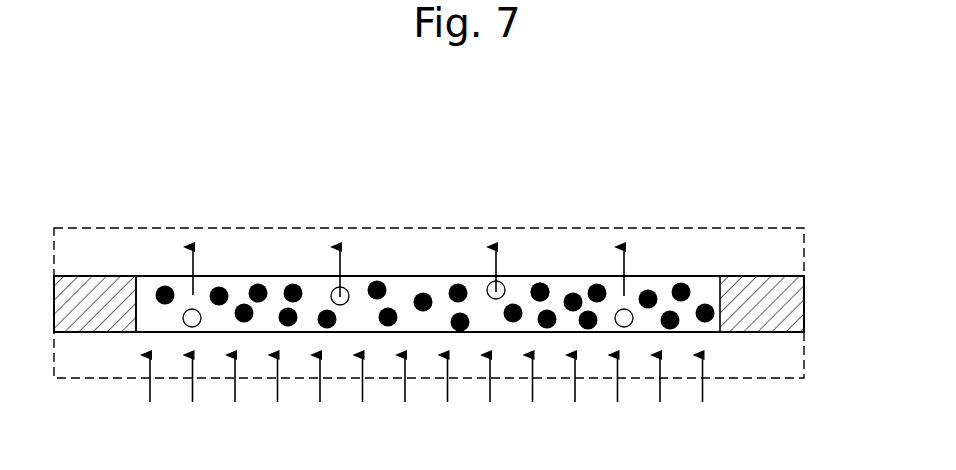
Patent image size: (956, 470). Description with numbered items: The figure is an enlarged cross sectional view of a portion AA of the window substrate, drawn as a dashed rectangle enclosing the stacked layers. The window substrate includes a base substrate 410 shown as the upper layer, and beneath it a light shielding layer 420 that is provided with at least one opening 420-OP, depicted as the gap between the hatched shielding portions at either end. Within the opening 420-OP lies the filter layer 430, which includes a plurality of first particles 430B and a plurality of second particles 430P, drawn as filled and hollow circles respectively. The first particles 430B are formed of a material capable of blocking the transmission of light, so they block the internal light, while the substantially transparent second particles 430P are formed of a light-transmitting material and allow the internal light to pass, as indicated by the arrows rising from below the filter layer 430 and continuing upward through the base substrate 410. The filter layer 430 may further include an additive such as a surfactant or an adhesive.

The base substrate 410 is at (792, 250).
The light shielding layer 420 is at (792, 304).
The filter layer 430 is at (497, 333).
The second particles 430P is at (194, 309).
The first particles 430B is at (540, 282).
The opening 420-OP is at (137, 303).
The portion AA is at (700, 228).